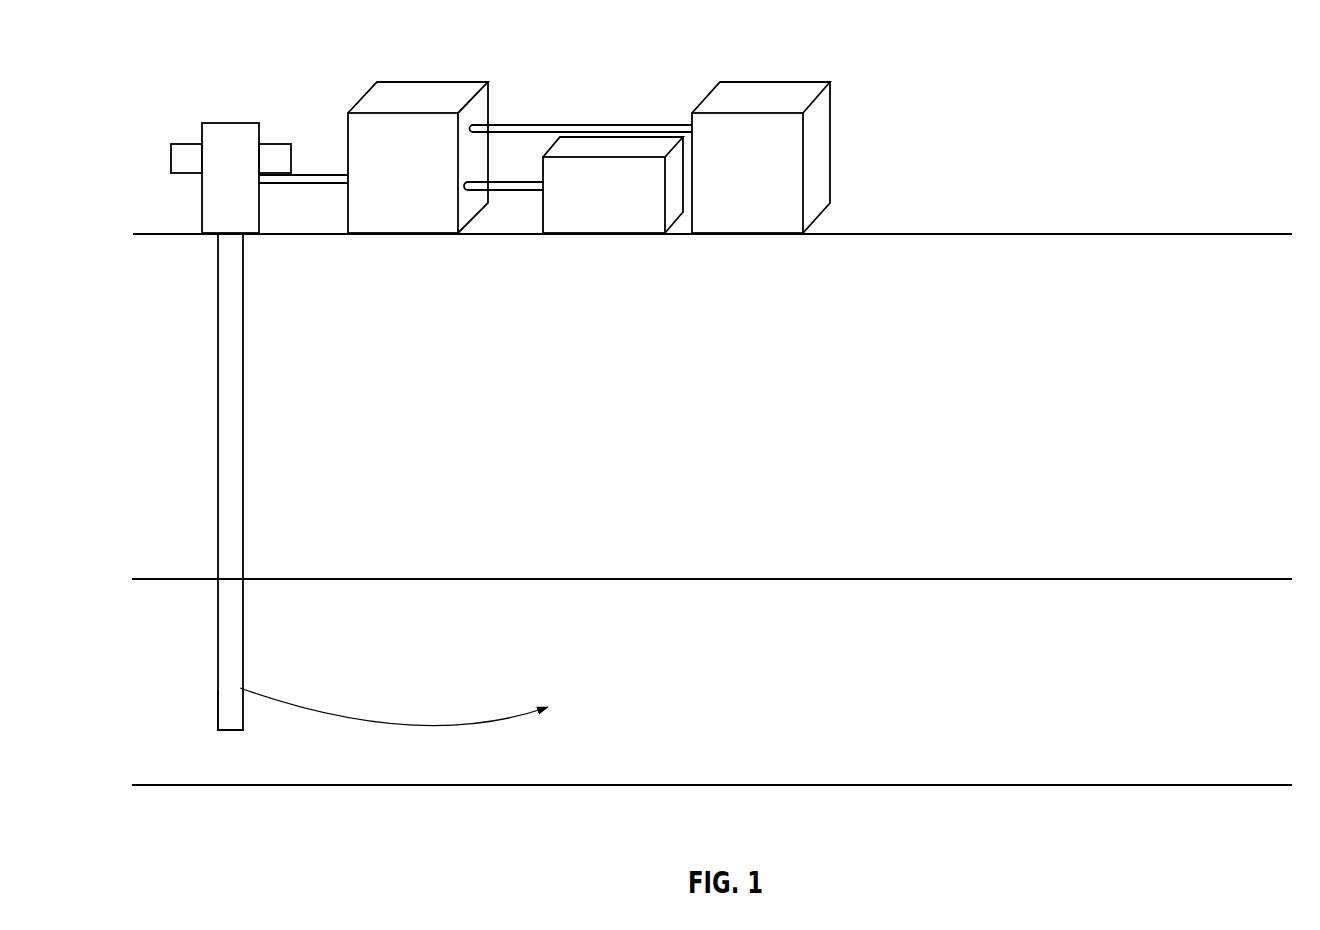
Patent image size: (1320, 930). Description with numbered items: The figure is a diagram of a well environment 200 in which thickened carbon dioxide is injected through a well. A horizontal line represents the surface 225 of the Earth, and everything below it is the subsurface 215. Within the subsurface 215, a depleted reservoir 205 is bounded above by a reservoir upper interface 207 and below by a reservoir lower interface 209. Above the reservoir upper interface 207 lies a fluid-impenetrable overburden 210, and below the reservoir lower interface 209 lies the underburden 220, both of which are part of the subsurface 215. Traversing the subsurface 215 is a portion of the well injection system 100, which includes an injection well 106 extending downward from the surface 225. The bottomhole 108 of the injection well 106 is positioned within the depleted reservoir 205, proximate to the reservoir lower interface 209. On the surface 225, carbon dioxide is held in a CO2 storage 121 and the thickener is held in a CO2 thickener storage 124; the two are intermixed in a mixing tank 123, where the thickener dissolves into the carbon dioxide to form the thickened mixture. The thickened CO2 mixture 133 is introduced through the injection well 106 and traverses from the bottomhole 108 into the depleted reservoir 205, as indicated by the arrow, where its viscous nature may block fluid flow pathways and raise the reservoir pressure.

The well injection system 100 is at (188, 87).
The injection well 106 is at (245, 350).
The bottomhole 108 is at (245, 702).
The CO2 storage 121 is at (770, 187).
The mixing tank 123 is at (423, 187).
The CO2 thickener storage 124 is at (625, 208).
The thickened CO2 mixture 133 is at (600, 702).
The well environment 200 is at (1115, 83).
The depleted reservoir 205 is at (1172, 677).
The reservoir upper interface 207 is at (888, 563).
The reservoir lower interface 209 is at (1237, 770).
The overburden 210 is at (520, 524).
The subsurface 215 is at (685, 421).
The underburden 220 is at (890, 841).
The surface 225 is at (1050, 223).